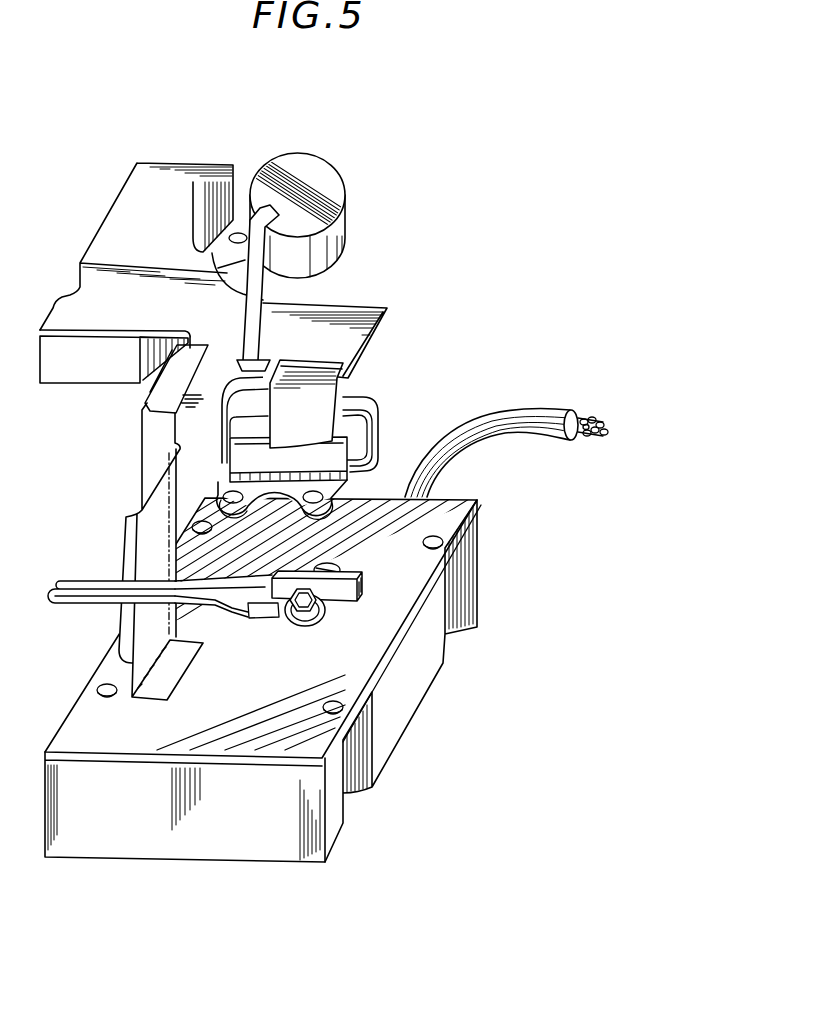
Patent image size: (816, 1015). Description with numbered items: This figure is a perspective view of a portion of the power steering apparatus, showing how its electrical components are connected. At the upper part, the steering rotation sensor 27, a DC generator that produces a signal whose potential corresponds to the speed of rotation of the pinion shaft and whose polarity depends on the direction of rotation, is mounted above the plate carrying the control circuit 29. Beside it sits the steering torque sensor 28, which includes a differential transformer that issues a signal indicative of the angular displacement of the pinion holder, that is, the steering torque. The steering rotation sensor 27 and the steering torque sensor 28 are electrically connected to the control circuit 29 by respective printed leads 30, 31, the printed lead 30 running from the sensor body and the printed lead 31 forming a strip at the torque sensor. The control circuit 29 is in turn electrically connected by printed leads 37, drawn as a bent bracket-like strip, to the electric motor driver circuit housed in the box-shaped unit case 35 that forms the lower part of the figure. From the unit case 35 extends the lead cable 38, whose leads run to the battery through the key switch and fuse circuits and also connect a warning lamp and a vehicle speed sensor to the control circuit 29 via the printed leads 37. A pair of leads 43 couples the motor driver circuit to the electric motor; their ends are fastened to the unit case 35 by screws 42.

The steering rotation sensor 27 is at (318, 165).
The steering torque sensor 28 is at (396, 426).
The control circuit 29 is at (97, 253).
The printed lead 30 is at (257, 296).
The printed lead 31 is at (323, 397).
The unit case 35 is at (393, 717).
The printed leads 37 is at (150, 455).
The lead cable 38 is at (511, 430).
The screws 42 is at (327, 566).
The leads 43 is at (78, 587).